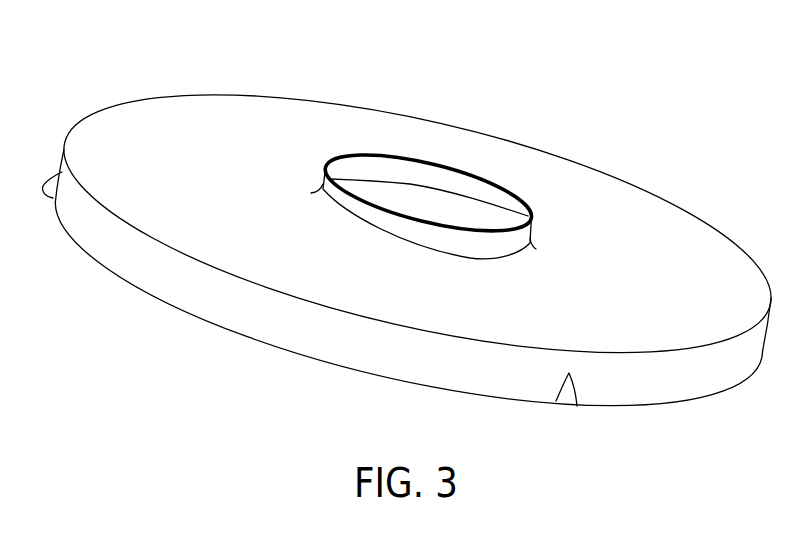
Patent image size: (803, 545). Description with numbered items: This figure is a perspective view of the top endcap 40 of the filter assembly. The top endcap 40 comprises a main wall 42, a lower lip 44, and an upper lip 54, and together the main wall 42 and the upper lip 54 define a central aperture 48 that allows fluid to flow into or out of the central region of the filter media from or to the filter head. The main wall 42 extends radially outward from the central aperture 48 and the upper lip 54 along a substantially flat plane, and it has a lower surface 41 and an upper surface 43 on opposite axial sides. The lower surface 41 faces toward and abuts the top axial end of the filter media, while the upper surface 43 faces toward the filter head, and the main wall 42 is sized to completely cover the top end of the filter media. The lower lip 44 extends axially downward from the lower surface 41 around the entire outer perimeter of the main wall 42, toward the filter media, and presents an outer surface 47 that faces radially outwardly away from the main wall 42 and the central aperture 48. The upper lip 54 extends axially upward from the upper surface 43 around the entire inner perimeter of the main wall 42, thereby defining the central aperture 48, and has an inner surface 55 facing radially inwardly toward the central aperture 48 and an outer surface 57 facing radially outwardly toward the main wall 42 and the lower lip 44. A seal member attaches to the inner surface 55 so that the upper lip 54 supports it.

The top endcap 40 is at (637, 126).
The lower surface 41 is at (372, 181).
The main wall 42 is at (710, 267).
The upper surface 43 is at (673, 221).
The lower lip 44 is at (111, 247).
The outer surface 47 is at (86, 219).
The central aperture 48 is at (458, 213).
The upper lip 54 is at (334, 206).
The inner surface 55 is at (426, 177).
The outer surface 57 is at (364, 220).